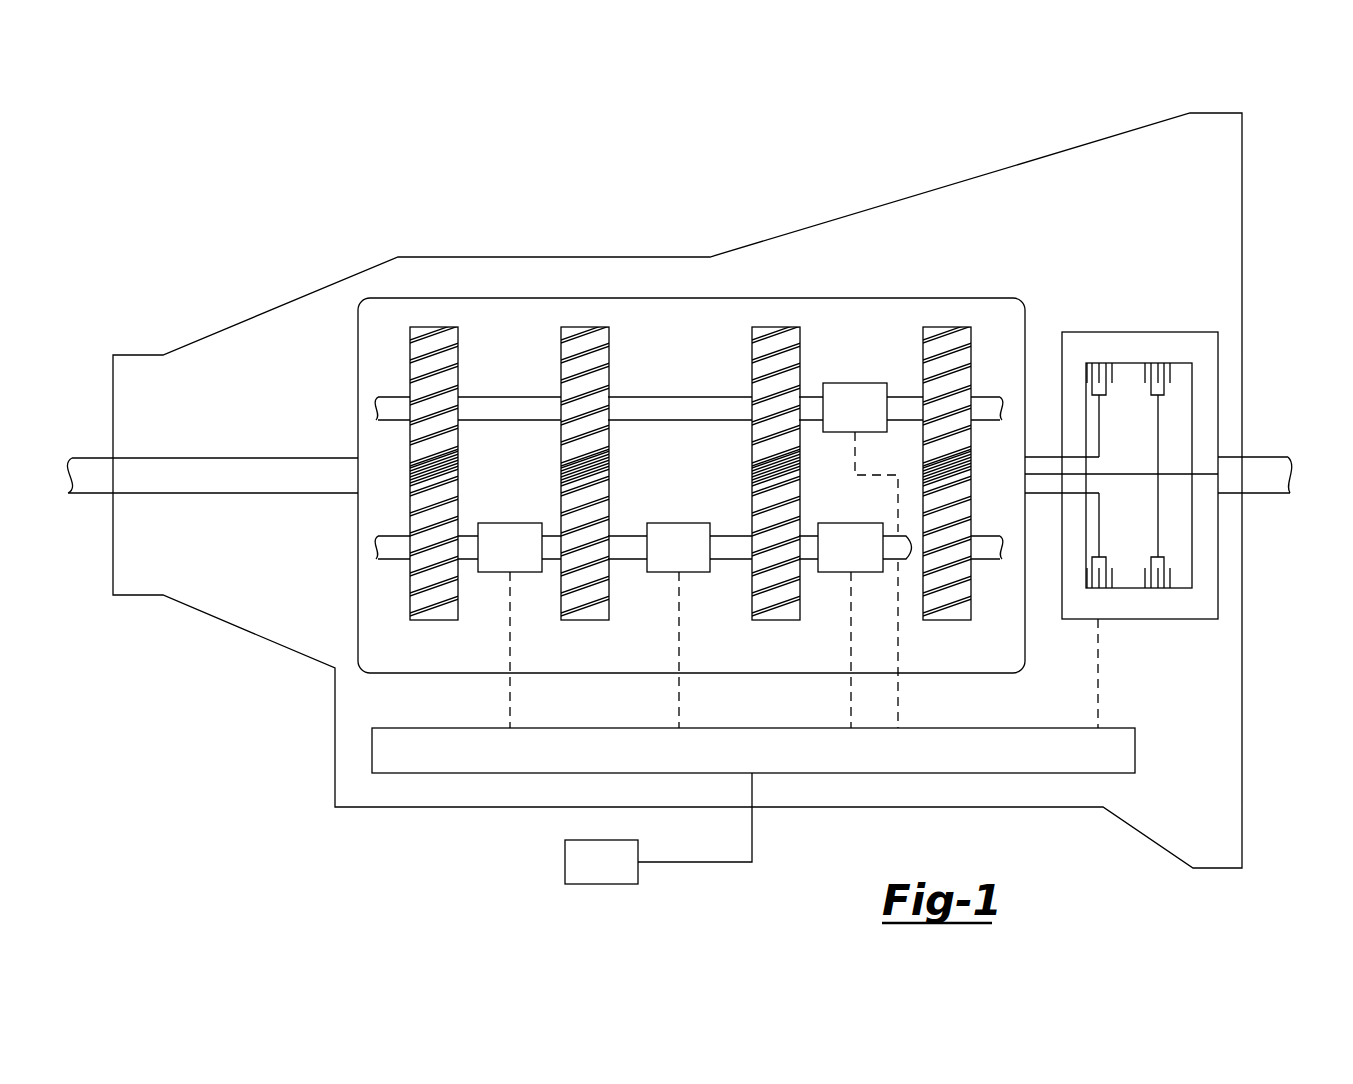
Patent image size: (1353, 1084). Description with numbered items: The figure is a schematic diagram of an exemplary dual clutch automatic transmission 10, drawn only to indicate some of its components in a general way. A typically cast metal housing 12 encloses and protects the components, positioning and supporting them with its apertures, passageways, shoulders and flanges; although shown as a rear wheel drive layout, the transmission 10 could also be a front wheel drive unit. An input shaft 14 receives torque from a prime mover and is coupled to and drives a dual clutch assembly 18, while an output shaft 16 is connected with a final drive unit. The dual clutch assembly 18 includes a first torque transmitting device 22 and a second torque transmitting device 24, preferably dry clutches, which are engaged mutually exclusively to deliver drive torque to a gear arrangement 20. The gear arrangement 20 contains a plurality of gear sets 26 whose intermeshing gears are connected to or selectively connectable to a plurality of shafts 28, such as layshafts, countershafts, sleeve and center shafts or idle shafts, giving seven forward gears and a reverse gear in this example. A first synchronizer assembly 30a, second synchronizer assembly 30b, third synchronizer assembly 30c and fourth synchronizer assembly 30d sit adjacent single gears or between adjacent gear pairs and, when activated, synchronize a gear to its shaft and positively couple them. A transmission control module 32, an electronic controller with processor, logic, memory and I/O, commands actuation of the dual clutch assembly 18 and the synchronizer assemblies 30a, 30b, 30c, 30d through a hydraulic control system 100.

The dual clutch transmission 10 is at (1285, 142).
The housing 12 is at (455, 257).
The input shaft 14 is at (1272, 457).
The output shaft 16 is at (85, 457).
The dual clutch assembly 18 is at (1135, 332).
The gear arrangement 20 is at (388, 297).
The first torque transmitting device 22 is at (1113, 577).
The second torque transmitting device 24 is at (1170, 577).
The gear sets 26 is at (565, 327).
The shafts 28 is at (517, 397).
The first synchronizer assembly 30a is at (494, 561).
The second synchronizer assembly 30b is at (663, 561).
The third synchronizer assembly 30c is at (835, 561).
The fourth synchronizer assembly 30d is at (839, 421).
The transmission control module 32 is at (613, 880).
The hydraulic control system 100 is at (735, 764).